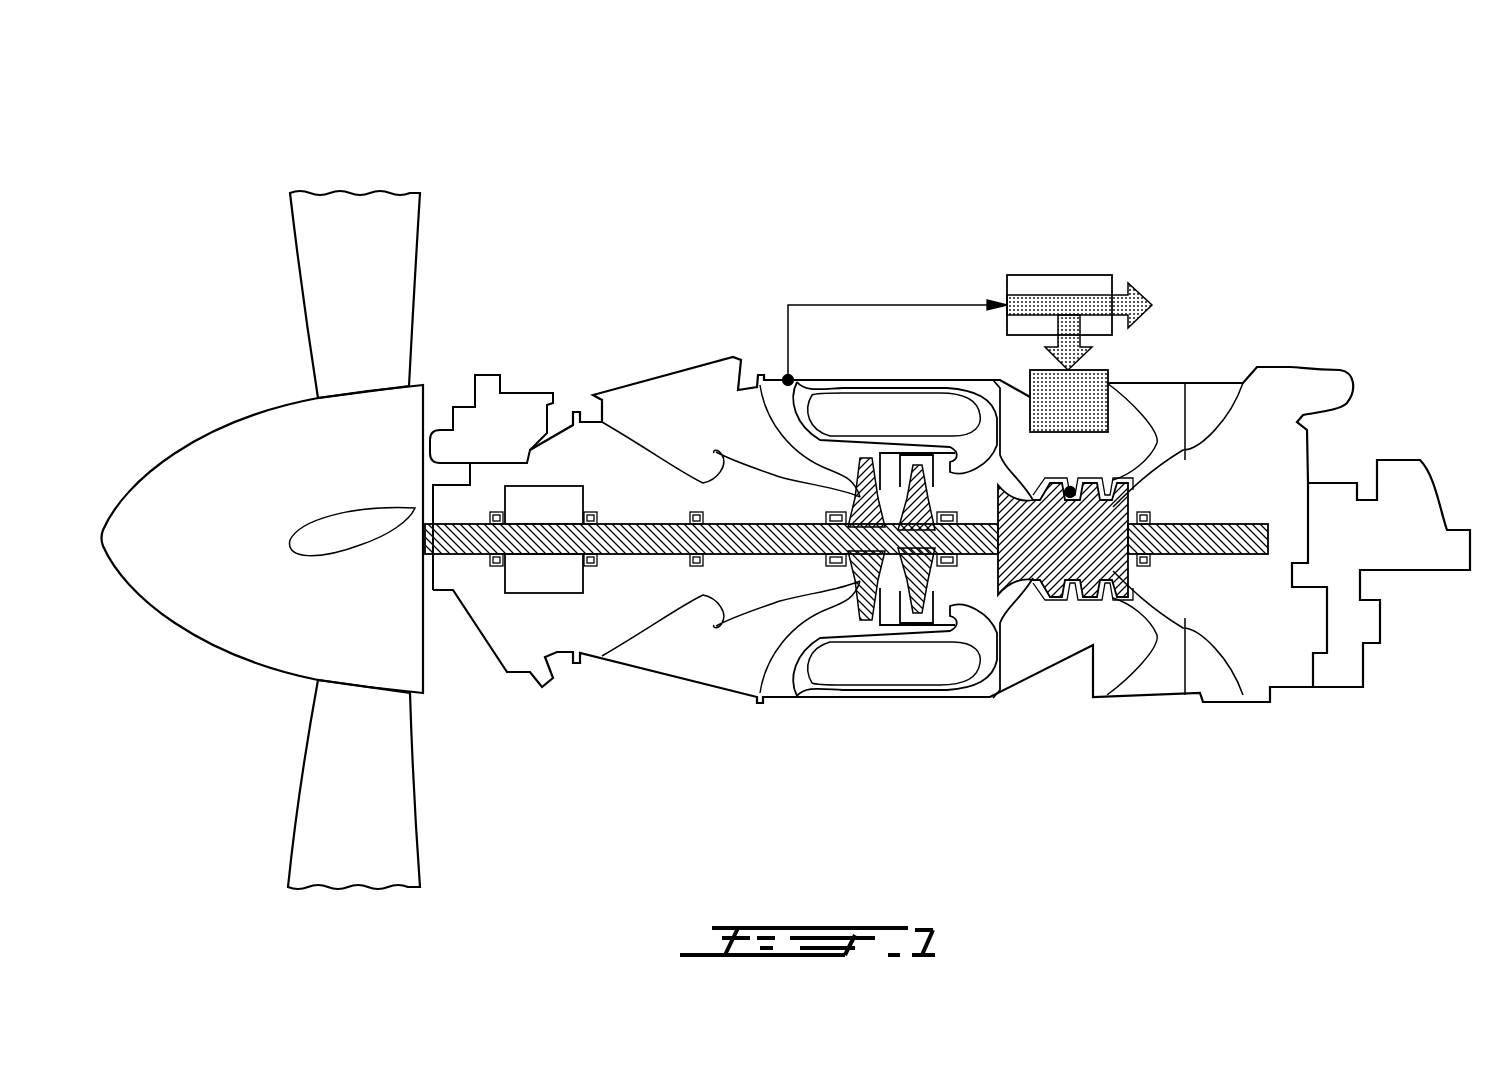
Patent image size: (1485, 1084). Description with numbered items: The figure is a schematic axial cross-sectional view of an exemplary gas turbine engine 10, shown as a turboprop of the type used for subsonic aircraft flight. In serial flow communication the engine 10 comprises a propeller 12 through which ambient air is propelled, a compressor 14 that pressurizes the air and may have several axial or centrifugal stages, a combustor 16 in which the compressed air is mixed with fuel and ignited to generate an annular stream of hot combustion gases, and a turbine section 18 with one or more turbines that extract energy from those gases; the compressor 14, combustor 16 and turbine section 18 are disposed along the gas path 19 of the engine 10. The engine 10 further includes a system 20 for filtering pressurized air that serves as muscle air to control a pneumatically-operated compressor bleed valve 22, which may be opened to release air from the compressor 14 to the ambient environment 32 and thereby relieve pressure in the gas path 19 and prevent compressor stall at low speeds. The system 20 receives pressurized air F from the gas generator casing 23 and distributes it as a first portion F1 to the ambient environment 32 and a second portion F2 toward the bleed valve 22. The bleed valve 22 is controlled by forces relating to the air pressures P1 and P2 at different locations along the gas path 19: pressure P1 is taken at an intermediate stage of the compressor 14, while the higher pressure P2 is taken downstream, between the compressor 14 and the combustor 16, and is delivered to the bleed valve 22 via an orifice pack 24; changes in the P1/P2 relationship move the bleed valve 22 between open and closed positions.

The gas turbine engine 10 is at (228, 172).
The propeller 12 is at (338, 317).
The compressor 14 is at (1157, 517).
The combustor 16 is at (877, 410).
The turbine section 18 is at (890, 577).
The gas path 19 is at (1247, 380).
The system 20 is at (1090, 247).
The compressor bleed valve 22 is at (1075, 398).
The gas generator casing 23 is at (788, 380).
The orifice pack 24 is at (1052, 275).
The ambient environment 32 is at (1218, 309).
The pressurized air F is at (910, 305).
The first portion of pressurized air F1 is at (1137, 298).
The second portion of pressurized air F2 is at (1067, 352).
The air pressure P1 is at (1070, 492).
The air pressure P2 is at (788, 380).